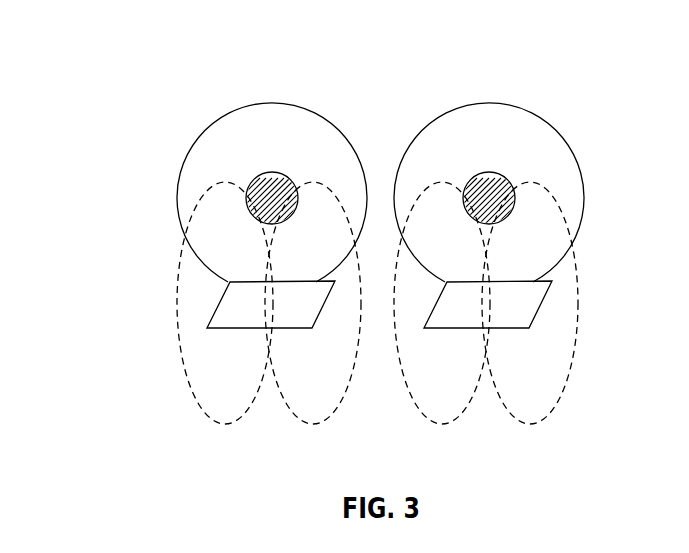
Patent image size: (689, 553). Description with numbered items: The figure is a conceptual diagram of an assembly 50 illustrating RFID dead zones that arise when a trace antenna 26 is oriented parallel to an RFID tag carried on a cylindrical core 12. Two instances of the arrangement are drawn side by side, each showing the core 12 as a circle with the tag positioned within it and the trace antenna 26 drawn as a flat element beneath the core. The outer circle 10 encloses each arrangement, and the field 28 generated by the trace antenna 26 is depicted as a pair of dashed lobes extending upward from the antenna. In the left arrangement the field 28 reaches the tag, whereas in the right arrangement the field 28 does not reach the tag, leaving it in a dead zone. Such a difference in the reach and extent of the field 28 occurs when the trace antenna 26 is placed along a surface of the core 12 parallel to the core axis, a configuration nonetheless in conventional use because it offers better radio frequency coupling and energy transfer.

The assembly 50 is at (97, 40).
The luminaire housing 10 is at (264, 99).
The cylindrical core 12 is at (261, 168).
The trace antenna 26 is at (218, 303).
The field 28 is at (178, 346).